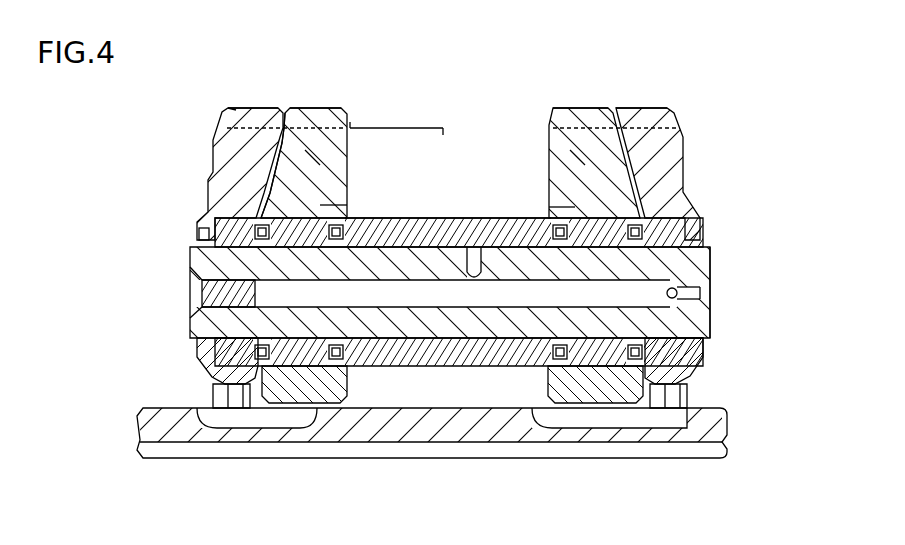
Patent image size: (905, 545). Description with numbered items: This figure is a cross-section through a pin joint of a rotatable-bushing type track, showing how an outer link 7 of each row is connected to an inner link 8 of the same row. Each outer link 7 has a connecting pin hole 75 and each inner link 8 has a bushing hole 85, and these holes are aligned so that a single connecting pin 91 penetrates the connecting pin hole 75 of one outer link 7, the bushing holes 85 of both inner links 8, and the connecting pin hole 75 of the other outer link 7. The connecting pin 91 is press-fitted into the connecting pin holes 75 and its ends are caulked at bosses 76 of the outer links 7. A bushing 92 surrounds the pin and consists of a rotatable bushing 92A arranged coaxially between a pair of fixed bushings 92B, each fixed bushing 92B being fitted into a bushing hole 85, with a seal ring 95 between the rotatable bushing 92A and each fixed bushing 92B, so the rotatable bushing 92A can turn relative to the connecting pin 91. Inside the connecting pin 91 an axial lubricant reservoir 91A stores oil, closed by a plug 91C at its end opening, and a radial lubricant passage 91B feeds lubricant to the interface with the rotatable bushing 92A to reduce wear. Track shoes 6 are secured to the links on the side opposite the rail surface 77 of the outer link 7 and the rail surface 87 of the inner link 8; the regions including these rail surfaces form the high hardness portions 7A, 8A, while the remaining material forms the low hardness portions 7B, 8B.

The track shoe 6 is at (677, 437).
The outer link 7 is at (237, 187).
The high hardness portion 7A is at (230, 128).
The low hardness portion 7B is at (243, 153).
The inner link 8 is at (347, 193).
The high hardness portion 8A is at (330, 128).
The low hardness portion 8B is at (312, 157).
The connecting pin hole 75 is at (697, 247).
The boss 76 is at (200, 230).
The rail surface 77 is at (246, 106).
The bushing hole 85 is at (318, 404).
The rail surface 87 is at (297, 106).
The connecting pin 91 is at (210, 327).
The lubricant reservoir 91A is at (428, 292).
The lubricant passage 91B is at (455, 218).
The plug 91C is at (205, 296).
The bushing 92 is at (396, 118).
The rotatable bushing 92A is at (420, 217).
The fixed bushing 92B is at (320, 205).
The seal ring 95 is at (237, 226).